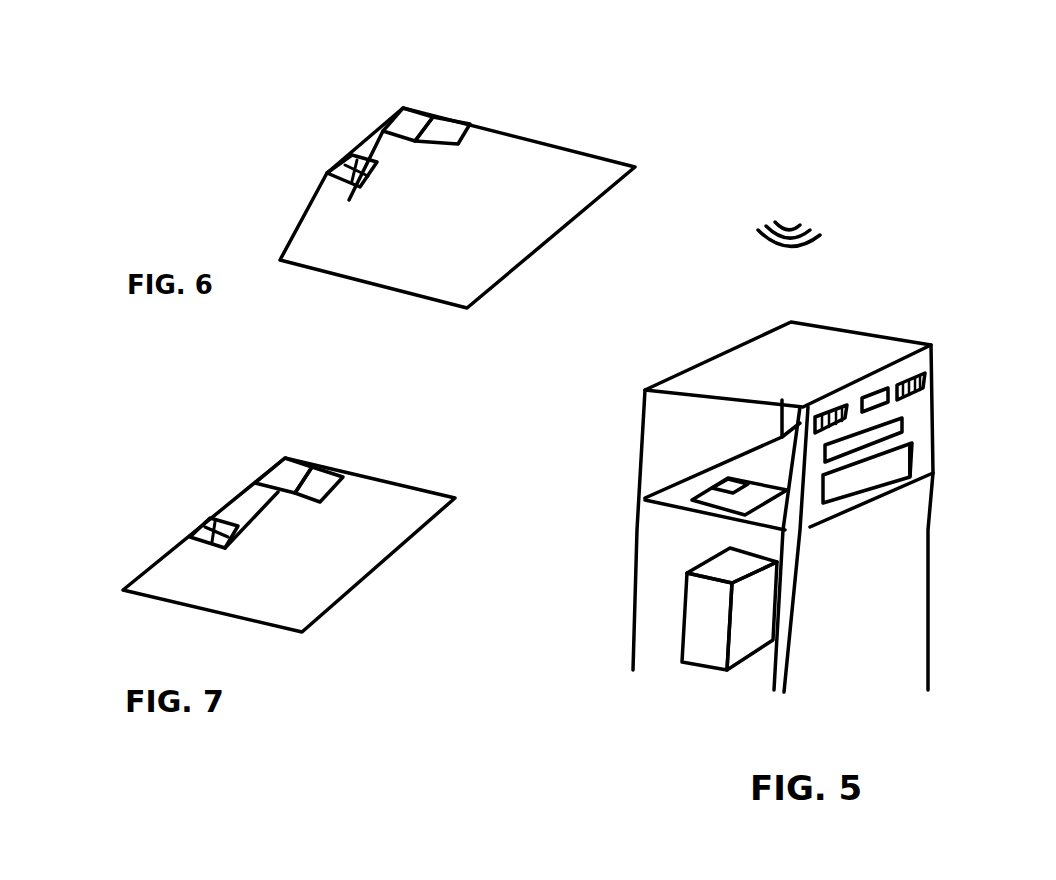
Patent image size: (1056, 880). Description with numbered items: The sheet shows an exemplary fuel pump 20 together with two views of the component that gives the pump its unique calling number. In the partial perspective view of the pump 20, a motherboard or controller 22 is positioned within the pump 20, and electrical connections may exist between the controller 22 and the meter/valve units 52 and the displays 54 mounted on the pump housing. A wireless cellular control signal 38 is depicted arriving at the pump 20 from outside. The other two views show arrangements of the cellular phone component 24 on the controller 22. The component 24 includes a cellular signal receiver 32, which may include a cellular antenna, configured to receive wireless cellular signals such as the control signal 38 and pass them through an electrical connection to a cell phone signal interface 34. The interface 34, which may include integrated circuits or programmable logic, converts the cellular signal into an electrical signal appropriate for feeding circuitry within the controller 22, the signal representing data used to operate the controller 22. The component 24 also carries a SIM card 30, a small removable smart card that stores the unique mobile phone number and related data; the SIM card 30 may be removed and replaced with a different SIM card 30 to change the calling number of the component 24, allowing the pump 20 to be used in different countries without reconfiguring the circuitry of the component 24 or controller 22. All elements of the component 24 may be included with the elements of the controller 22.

In FIG. 5, the fuel pump 20 is at (958, 336).
In FIG. 6, the controller 22 is at (423, 253).
In FIG. 7, the controller 22 is at (275, 592).
In FIG. 5, the controller 22 is at (733, 502).
In FIG. 6, the cellular phone component 24 is at (370, 147).
In FIG. 7, the cellular phone component 24 is at (243, 500).
In FIG. 6, the SIM card 30 is at (348, 162).
In FIG. 7, the SIM card 30 is at (217, 522).
In FIG. 6, the cellular signal receiver 32 is at (413, 120).
In FIG. 7, the cellular signal receiver 32 is at (275, 480).
In FIG. 5, the cellular signal receiver 32 is at (727, 482).
In FIG. 6, the cell phone signal interface 34 is at (455, 130).
In FIG. 7, the cell phone signal interface 34 is at (327, 480).
In FIG. 5, the control signal 38 is at (789, 218).
In FIG. 5, the meter/valve units 52 is at (715, 655).
In FIG. 5, the displays 54 is at (915, 401).